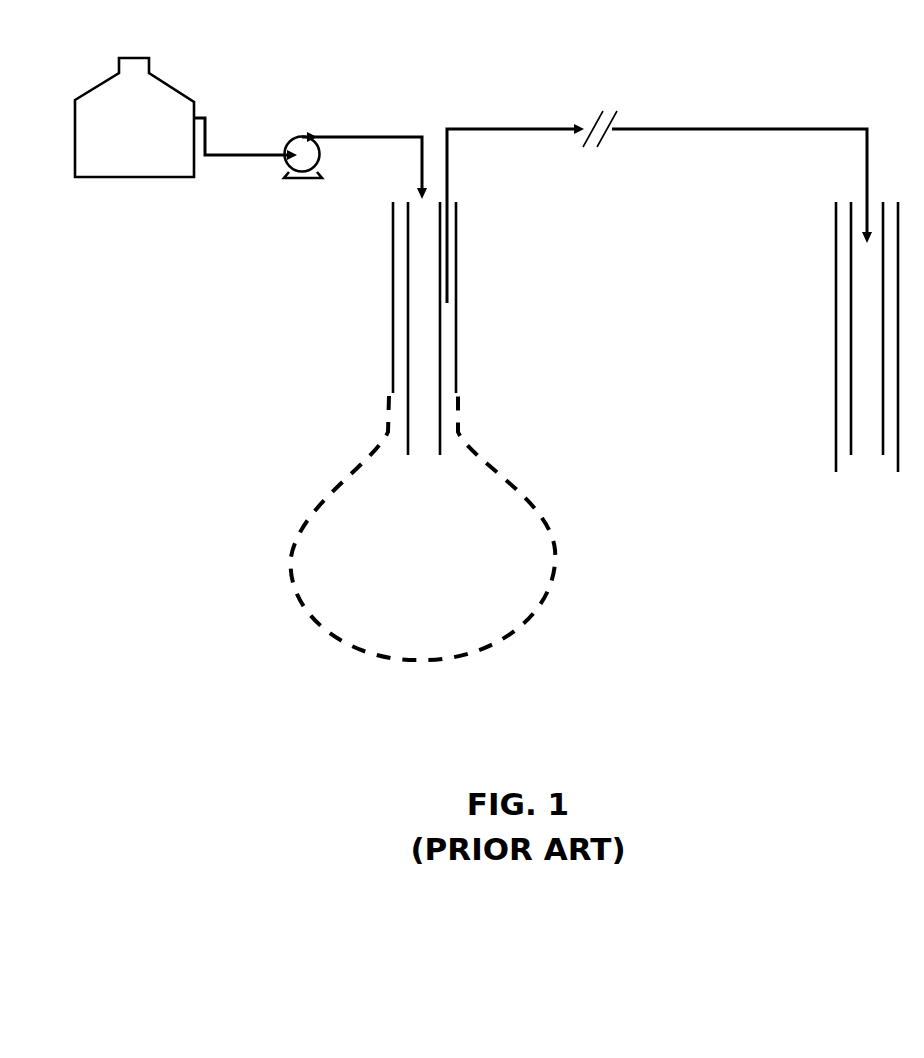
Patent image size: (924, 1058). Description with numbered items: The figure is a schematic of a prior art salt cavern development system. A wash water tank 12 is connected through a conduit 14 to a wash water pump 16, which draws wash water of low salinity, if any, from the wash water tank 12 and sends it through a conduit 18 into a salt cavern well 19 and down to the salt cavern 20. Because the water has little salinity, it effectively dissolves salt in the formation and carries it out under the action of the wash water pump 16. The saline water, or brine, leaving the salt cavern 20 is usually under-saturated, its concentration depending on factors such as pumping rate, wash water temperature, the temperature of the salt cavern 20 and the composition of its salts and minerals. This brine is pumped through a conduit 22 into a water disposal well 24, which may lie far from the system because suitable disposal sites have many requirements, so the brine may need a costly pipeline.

The wash water tank 12 is at (134, 117).
The conduit 14 is at (245, 149).
The wash water pump 16 is at (302, 206).
The conduit 18 is at (364, 151).
The salt cavern well 19 is at (440, 331).
The salt cavern 20 is at (423, 528).
The conduit 22 is at (659, 203).
The water disposal well 24 is at (860, 384).